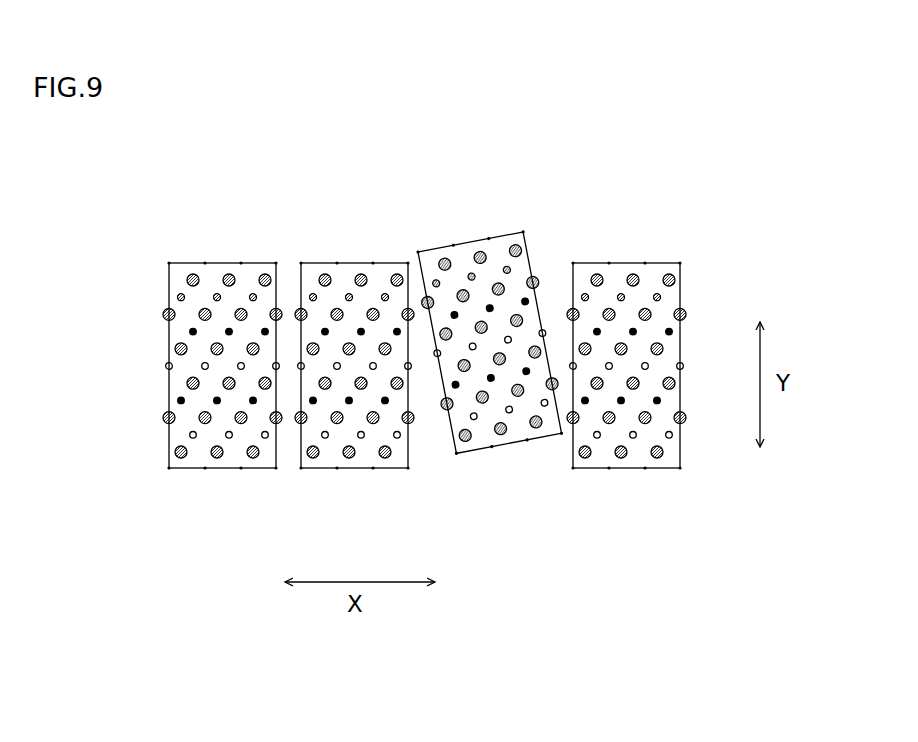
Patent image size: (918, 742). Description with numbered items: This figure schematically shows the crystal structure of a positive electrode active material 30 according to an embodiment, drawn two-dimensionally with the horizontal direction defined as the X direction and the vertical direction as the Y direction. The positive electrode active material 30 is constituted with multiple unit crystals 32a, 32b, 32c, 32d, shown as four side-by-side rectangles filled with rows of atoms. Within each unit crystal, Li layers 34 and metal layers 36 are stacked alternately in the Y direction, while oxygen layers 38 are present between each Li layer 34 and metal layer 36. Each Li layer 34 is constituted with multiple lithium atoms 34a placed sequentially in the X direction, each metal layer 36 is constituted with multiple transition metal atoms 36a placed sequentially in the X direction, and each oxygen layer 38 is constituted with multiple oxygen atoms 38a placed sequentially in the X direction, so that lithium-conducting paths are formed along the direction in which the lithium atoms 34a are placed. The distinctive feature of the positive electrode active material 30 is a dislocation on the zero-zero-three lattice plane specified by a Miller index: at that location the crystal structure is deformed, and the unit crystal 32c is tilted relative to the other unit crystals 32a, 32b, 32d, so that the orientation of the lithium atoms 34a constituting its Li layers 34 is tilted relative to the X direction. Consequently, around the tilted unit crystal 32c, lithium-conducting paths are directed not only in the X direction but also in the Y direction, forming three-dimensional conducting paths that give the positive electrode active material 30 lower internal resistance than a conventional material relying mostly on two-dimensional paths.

The positive electrode active material 30 is at (446, 291).
The unit crystal 32a is at (238, 222).
The unit crystal 32b is at (372, 222).
The unit crystal 32c is at (478, 222).
The unit crystal 32d is at (634, 222).
The Li layer 34 is at (152, 330).
The lithium atom 34a is at (172, 397).
The metal layer 36 is at (152, 370).
The transition metal atom 36a is at (176, 292).
The oxygen layer 38 is at (164, 397).
The oxygen atom 38a is at (190, 268).